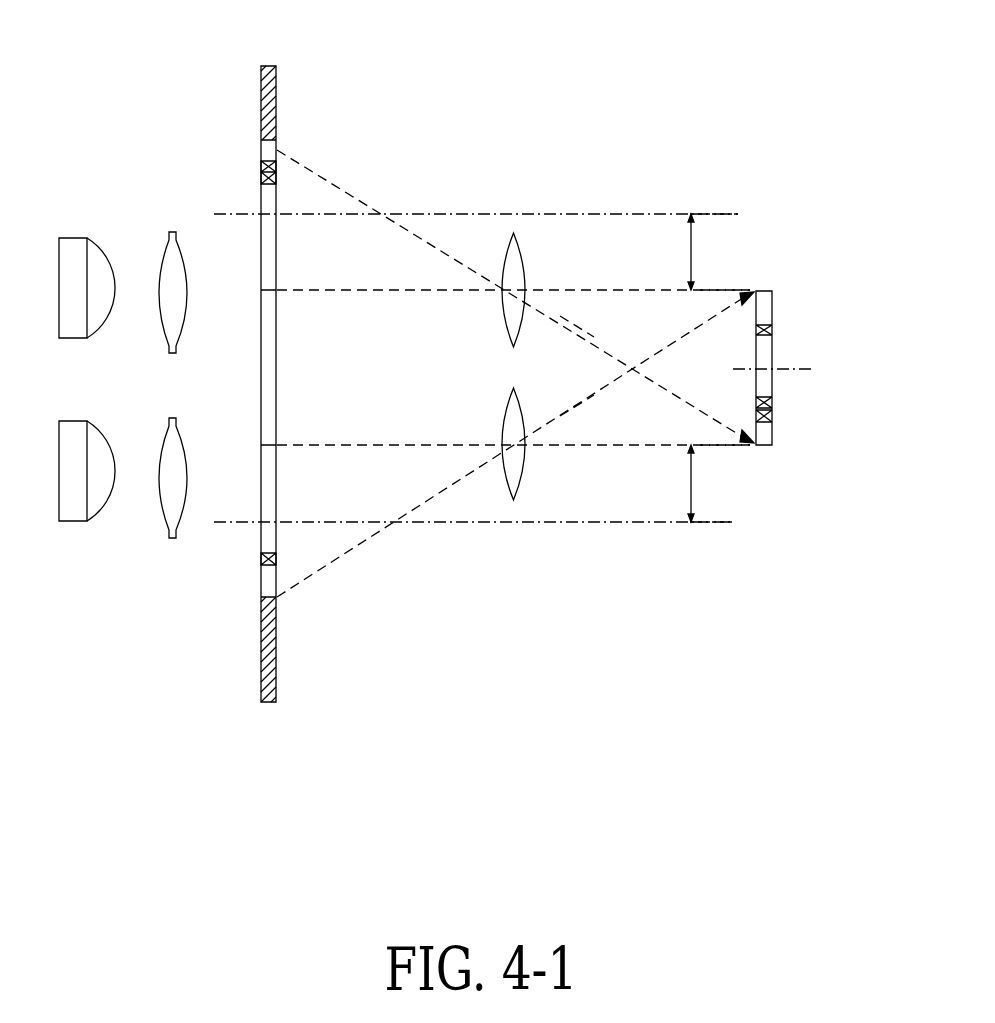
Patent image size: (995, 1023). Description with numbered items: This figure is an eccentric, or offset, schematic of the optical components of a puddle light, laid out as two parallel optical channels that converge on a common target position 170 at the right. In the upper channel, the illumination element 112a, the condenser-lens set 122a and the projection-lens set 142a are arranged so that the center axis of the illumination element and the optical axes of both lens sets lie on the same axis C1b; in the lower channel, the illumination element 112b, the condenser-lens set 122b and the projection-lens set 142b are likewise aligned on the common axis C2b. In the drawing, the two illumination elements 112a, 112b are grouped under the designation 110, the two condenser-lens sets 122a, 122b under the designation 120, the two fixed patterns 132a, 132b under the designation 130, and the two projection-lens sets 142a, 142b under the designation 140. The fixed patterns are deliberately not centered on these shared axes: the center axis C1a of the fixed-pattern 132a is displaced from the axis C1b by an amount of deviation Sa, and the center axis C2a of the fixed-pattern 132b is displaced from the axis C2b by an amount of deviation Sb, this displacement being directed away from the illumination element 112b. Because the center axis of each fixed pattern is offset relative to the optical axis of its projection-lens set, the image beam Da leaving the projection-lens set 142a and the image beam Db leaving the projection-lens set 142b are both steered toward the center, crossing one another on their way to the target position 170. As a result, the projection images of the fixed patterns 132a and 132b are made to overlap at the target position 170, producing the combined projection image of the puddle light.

The light source unit 110 is at (77, 381).
The illumination element 112a is at (73, 233).
The illumination element 112b is at (85, 523).
The collimating lens unit 120 is at (193, 390).
The condenser-lens set 122a is at (173, 230).
The condenser-lens set 122b is at (175, 540).
The aperture plate 130 is at (313, 368).
The fixed-pattern 132a is at (278, 155).
The fixed-pattern 132b is at (278, 578).
The imaging lens unit 140 is at (541, 370).
The projection-lens set 142a is at (520, 242).
The projection-lens set 142b is at (518, 495).
The target position 170 is at (775, 355).
The center axis of the fixed-pattern C1a is at (725, 213).
The axis C1b is at (747, 285).
The center axis of the fixed-pattern C2a is at (718, 523).
The axis C2b is at (737, 450).
The image beam Da is at (577, 330).
The image beam Db is at (570, 413).
The amount of deviation Sa is at (707, 252).
The amount of deviation Sb is at (709, 483).